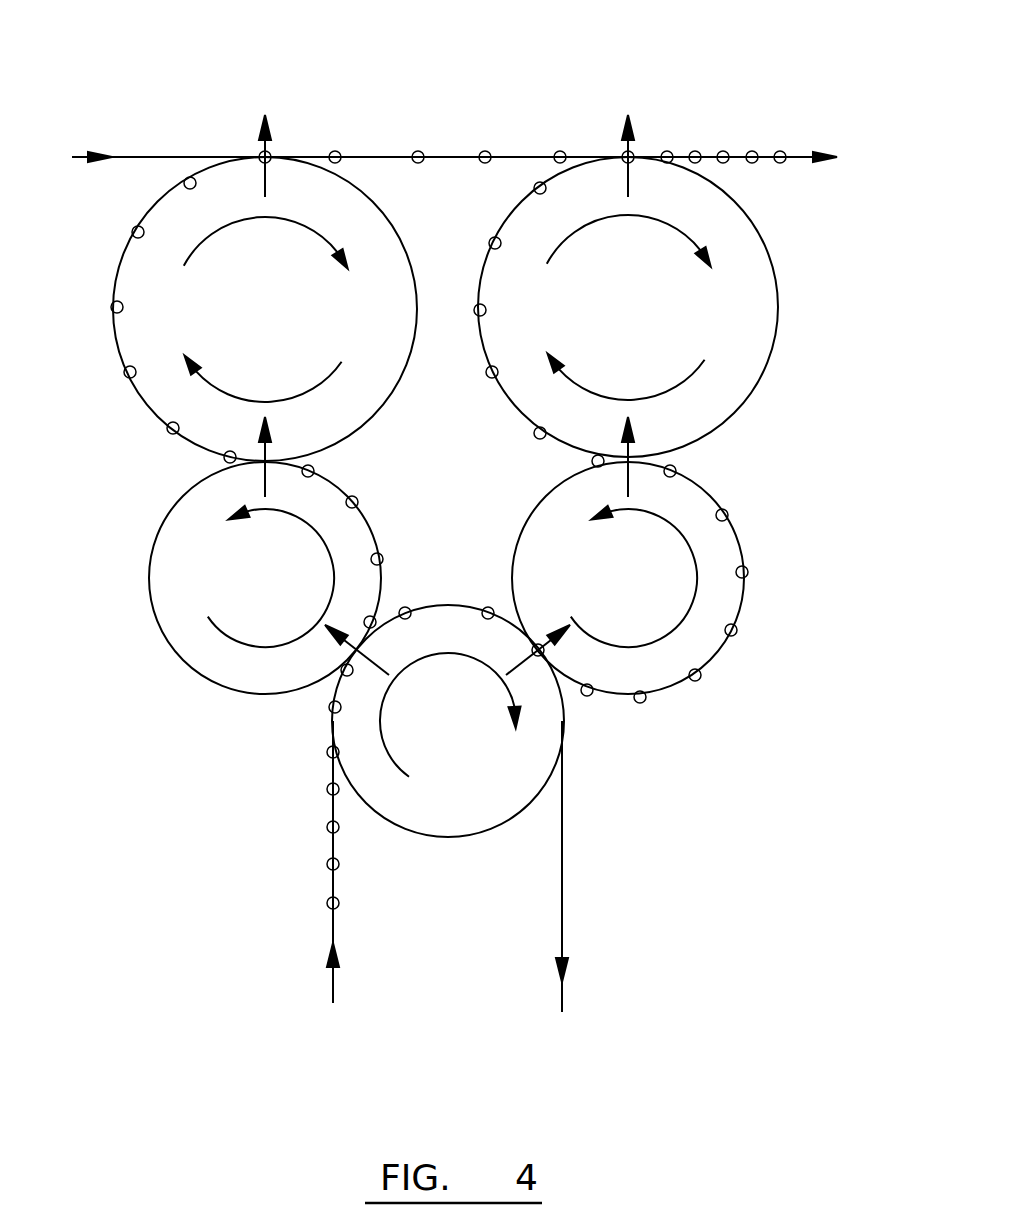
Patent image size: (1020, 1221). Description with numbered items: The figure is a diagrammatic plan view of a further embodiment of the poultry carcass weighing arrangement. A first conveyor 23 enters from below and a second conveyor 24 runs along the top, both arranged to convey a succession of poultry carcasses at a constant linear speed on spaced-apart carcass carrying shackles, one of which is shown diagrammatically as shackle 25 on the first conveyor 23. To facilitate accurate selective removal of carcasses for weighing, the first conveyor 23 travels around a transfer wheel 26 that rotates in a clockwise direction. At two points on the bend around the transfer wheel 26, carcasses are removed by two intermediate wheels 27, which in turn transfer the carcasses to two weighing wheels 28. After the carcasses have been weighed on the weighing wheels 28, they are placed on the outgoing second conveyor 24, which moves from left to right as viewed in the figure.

The first conveyor 23 is at (562, 910).
The second conveyor 24 is at (795, 155).
The poultry carcass carrying shackle 25 is at (327, 790).
The transfer wheel 26 is at (530, 762).
The intermediate wheel 27 is at (187, 635).
The weighing wheel 28 is at (160, 382).